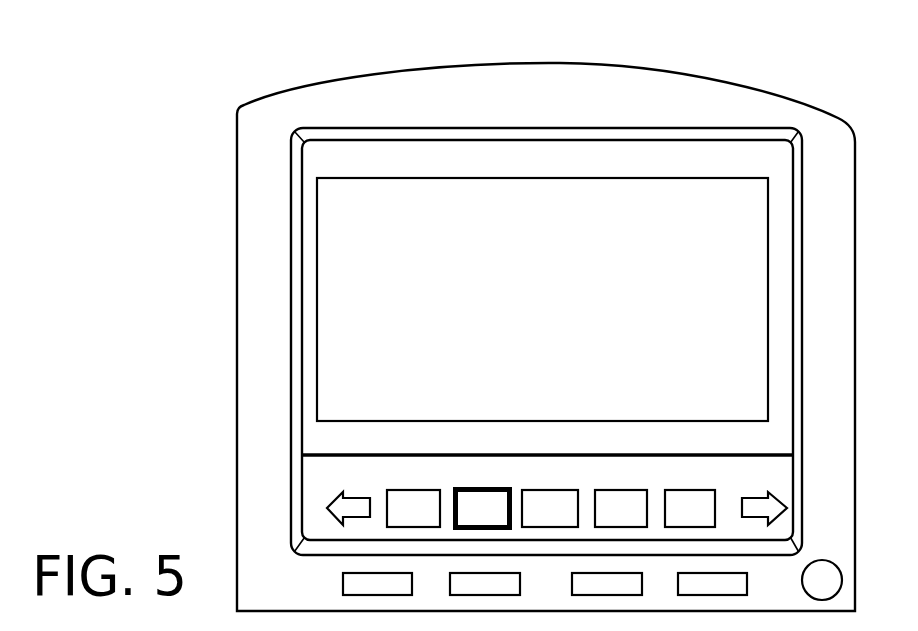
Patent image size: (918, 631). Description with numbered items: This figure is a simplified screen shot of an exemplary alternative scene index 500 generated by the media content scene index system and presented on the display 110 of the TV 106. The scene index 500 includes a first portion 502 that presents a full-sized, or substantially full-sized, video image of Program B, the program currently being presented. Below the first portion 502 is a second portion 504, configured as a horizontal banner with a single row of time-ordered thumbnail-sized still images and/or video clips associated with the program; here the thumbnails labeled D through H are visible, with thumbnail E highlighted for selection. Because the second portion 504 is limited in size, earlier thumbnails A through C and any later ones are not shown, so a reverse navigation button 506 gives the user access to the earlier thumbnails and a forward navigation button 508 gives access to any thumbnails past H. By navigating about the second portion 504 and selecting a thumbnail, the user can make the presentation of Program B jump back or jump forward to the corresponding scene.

The scene index 500 is at (486, 315).
The TV 106 is at (737, 80).
The display 110 is at (770, 167).
The first portion 502 is at (459, 170).
The second portion 504 is at (562, 472).
The reverse navigation button 506 is at (346, 497).
The forward navigation button 508 is at (756, 497).